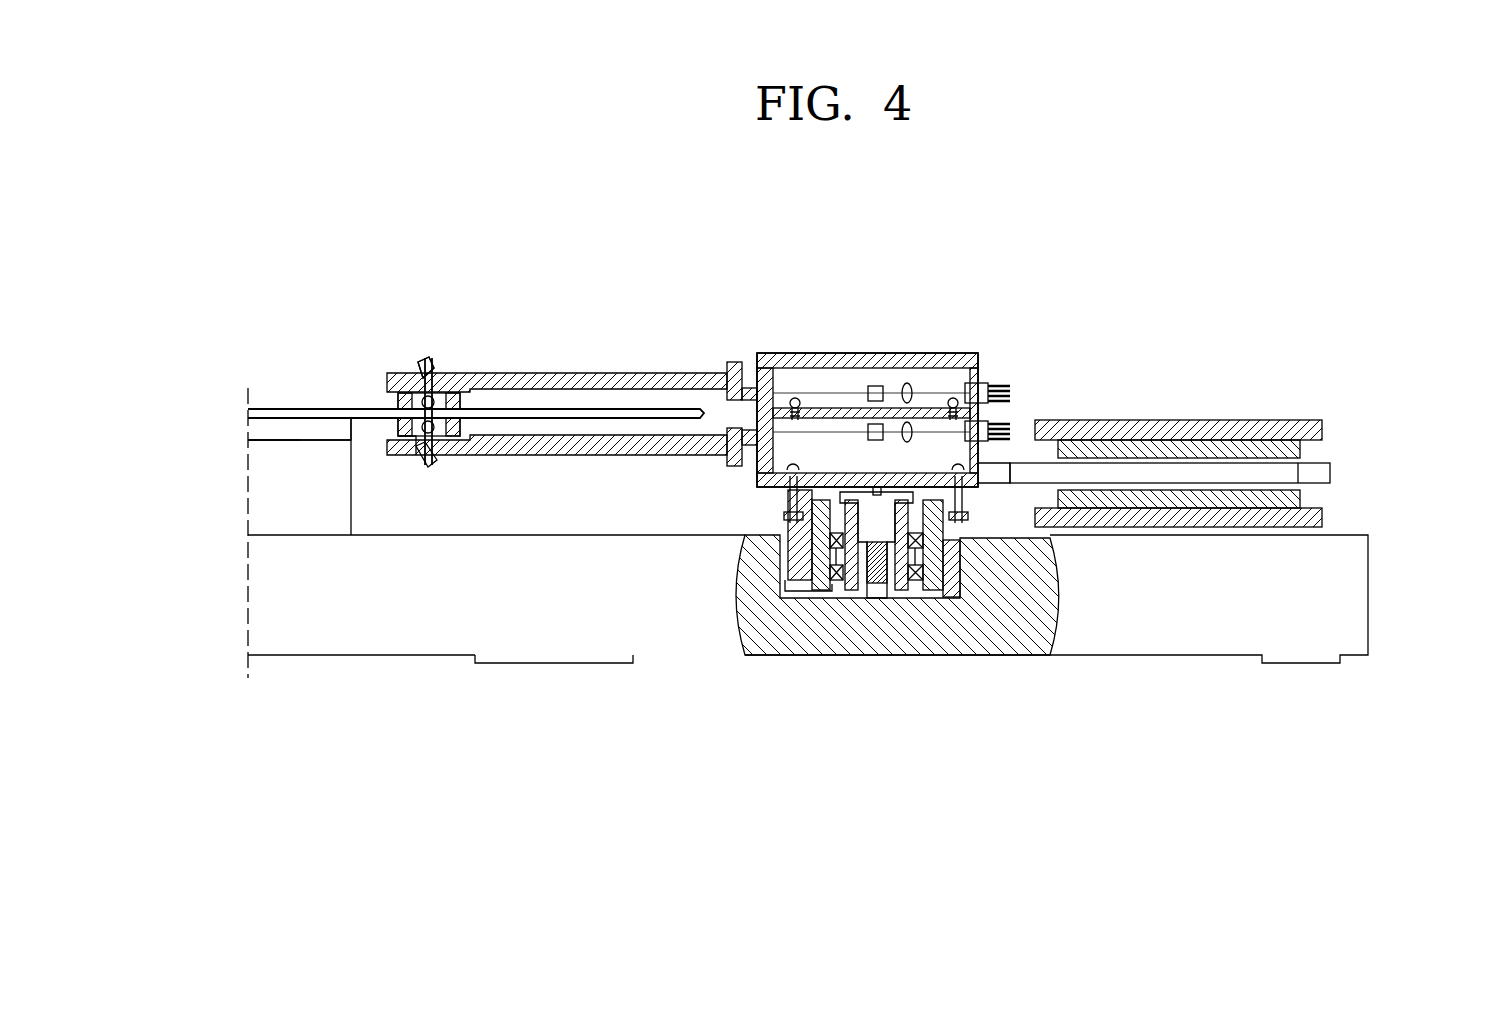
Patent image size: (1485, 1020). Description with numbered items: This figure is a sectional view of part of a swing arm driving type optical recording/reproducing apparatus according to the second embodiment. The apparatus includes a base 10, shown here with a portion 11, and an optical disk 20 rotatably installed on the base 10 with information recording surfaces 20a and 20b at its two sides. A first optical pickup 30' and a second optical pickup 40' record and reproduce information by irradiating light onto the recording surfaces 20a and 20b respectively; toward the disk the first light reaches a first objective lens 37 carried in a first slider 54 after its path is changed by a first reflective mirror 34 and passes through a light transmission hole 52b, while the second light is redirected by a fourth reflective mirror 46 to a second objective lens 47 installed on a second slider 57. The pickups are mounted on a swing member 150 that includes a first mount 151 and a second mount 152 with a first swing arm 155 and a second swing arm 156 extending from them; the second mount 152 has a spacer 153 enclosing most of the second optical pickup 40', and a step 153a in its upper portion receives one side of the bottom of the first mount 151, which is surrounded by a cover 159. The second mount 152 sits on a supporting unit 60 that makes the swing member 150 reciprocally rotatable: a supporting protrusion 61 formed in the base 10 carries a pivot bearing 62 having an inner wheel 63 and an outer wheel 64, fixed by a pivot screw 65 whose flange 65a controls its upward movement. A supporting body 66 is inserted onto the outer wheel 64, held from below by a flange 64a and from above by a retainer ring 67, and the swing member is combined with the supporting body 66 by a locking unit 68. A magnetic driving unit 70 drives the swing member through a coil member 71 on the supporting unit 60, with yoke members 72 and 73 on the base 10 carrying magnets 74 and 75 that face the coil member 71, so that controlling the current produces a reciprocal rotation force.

The base 10 is at (1370, 592).
The support block 11 is at (295, 520).
The optical disk 20 is at (246, 410).
The information recording surface 20a is at (273, 409).
The information recording surface 20b is at (268, 447).
The first optical pickup 30' is at (867, 364).
The first reflective mirror 34 is at (422, 364).
The first objective lens 37 is at (433, 390).
The second optical pickup 40' is at (1026, 427).
The fourth reflective mirror 46 is at (428, 466).
The second objective lens 47 is at (410, 455).
The light transmission hole 52b is at (416, 382).
The first slider 54 is at (402, 400).
The second slider 57 is at (398, 425).
The supporting unit 60 is at (792, 582).
The supporting protrusion 61 is at (887, 522).
The pivot bearing 62 is at (885, 666).
The inner wheel 63 is at (862, 540).
The outer wheel 64 is at (923, 556).
The flange 64a is at (955, 580).
The pivot screw 65 is at (962, 498).
The flange 65a is at (790, 515).
The supporting body 66 is at (828, 557).
The retainer ring 67 is at (993, 587).
The locking unit 68 is at (778, 597).
The magnetic driving unit 70 is at (1234, 451).
The coil member 71 is at (1335, 473).
The yoke member 72 is at (1290, 420).
The yoke member 73 is at (1325, 518).
The magnet 74 is at (1305, 440).
The magnet 75 is at (1305, 500).
The swing member 150 is at (696, 381).
The first mount 151 is at (797, 390).
The second mount 152 is at (1014, 440).
The spacer 153 is at (743, 470).
The step 153a is at (752, 364).
The first swing arm 155 is at (590, 373).
The second swing arm 156 is at (578, 452).
The cover 159 is at (964, 360).